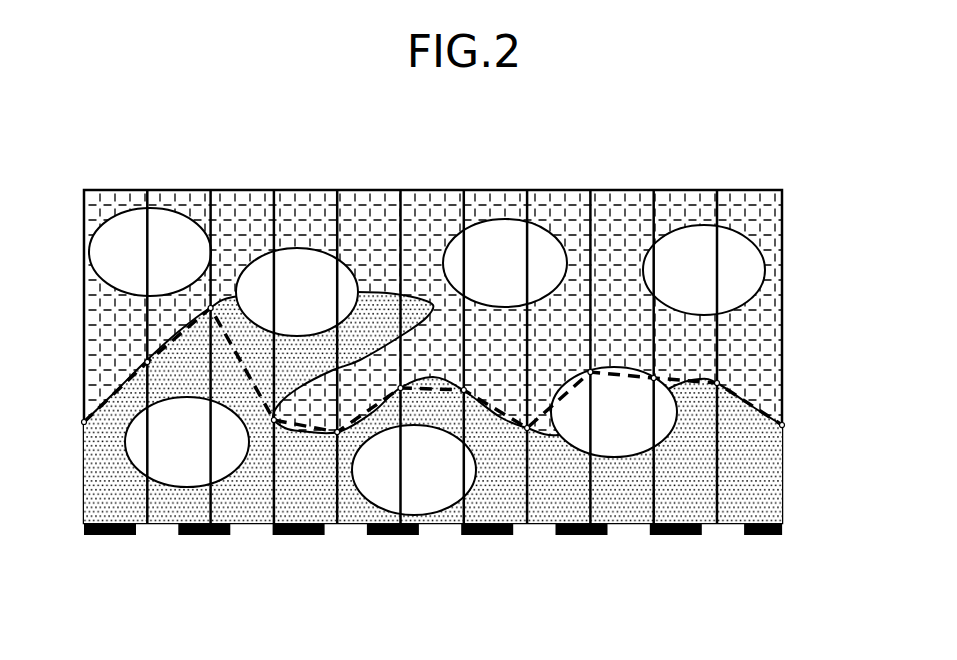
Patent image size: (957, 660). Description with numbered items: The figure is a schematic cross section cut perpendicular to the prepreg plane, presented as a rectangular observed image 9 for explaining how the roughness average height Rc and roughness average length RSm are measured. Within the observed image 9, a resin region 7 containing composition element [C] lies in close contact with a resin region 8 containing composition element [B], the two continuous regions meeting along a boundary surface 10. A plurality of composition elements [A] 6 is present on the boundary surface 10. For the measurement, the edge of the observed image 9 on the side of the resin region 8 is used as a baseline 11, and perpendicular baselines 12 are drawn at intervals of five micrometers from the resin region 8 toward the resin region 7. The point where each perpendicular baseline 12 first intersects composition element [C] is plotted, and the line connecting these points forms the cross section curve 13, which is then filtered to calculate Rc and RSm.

The composition element [A] 6 is at (762, 253).
The resin region containing composition element [C] 7 is at (763, 333).
The resin region containing composition element [B] 8 is at (772, 447).
The observed image 9 is at (857, 226).
The boundary surface 10 is at (378, 293).
The baseline 11 is at (104, 537).
The perpendicular baselines 12 is at (148, 520).
The cross section curve 13 is at (108, 397).